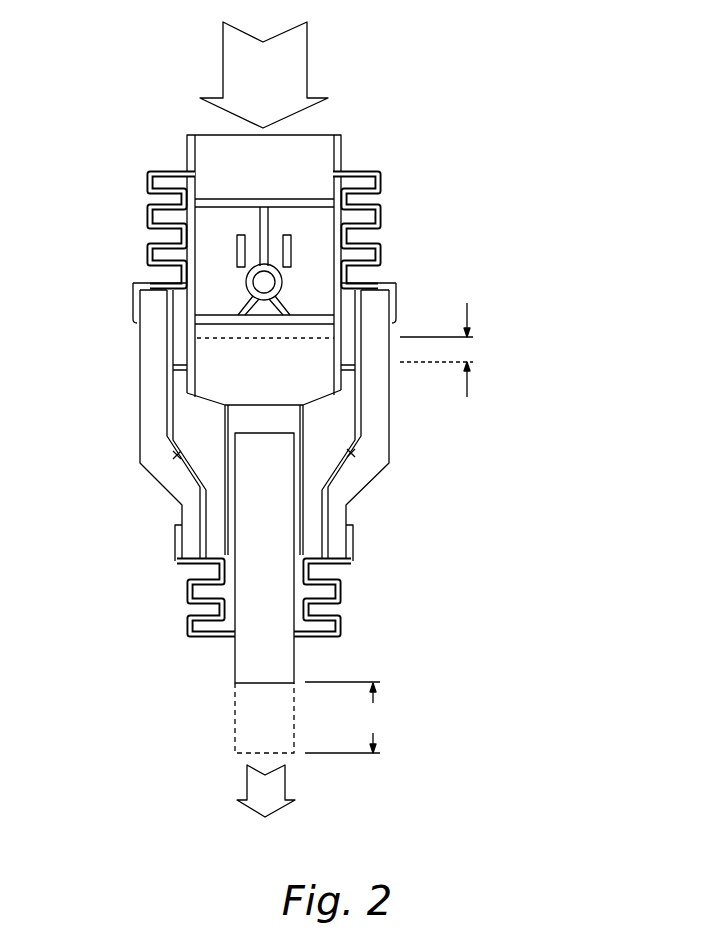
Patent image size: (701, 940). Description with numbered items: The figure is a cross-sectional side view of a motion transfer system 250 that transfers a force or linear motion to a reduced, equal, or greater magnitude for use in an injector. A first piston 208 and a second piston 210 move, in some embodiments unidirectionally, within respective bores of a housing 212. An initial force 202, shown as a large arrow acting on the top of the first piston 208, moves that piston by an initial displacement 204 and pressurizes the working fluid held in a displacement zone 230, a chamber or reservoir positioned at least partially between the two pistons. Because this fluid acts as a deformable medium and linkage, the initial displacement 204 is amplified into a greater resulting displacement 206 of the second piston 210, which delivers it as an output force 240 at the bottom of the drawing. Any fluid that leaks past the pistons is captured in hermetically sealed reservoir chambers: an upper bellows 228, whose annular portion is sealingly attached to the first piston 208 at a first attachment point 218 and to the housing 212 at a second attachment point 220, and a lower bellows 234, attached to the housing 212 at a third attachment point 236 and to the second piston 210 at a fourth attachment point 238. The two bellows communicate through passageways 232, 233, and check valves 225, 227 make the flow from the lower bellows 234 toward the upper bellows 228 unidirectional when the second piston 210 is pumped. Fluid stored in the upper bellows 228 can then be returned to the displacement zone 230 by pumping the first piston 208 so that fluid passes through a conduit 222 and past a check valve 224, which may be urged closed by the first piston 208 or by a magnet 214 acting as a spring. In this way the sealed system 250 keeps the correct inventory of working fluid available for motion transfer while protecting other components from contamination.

The initial force 202 is at (310, 58).
The initial displacement 204 is at (468, 392).
The resulting displacement 206 is at (348, 717).
The first piston 208 is at (210, 175).
The second piston 210 is at (240, 462).
The housing 212 is at (160, 346).
The magnet 214 is at (236, 251).
The first attachment point 218 is at (182, 158).
The second attachment point 220 is at (403, 302).
The conduit 222 is at (326, 197).
The check valve 224 is at (283, 282).
The check valve 225 is at (352, 456).
The check valve 227 is at (174, 458).
The upper bellows 228 is at (270, 227).
The displacement zone 230 is at (215, 390).
The passageway 232 is at (365, 423).
The passageway 233 is at (181, 502).
The lower bellows 234 is at (350, 588).
The third attachment point 236 is at (356, 527).
The fourth attachment point 238 is at (303, 630).
The output force 240 is at (288, 785).
The motion transfer system 250 is at (513, 105).